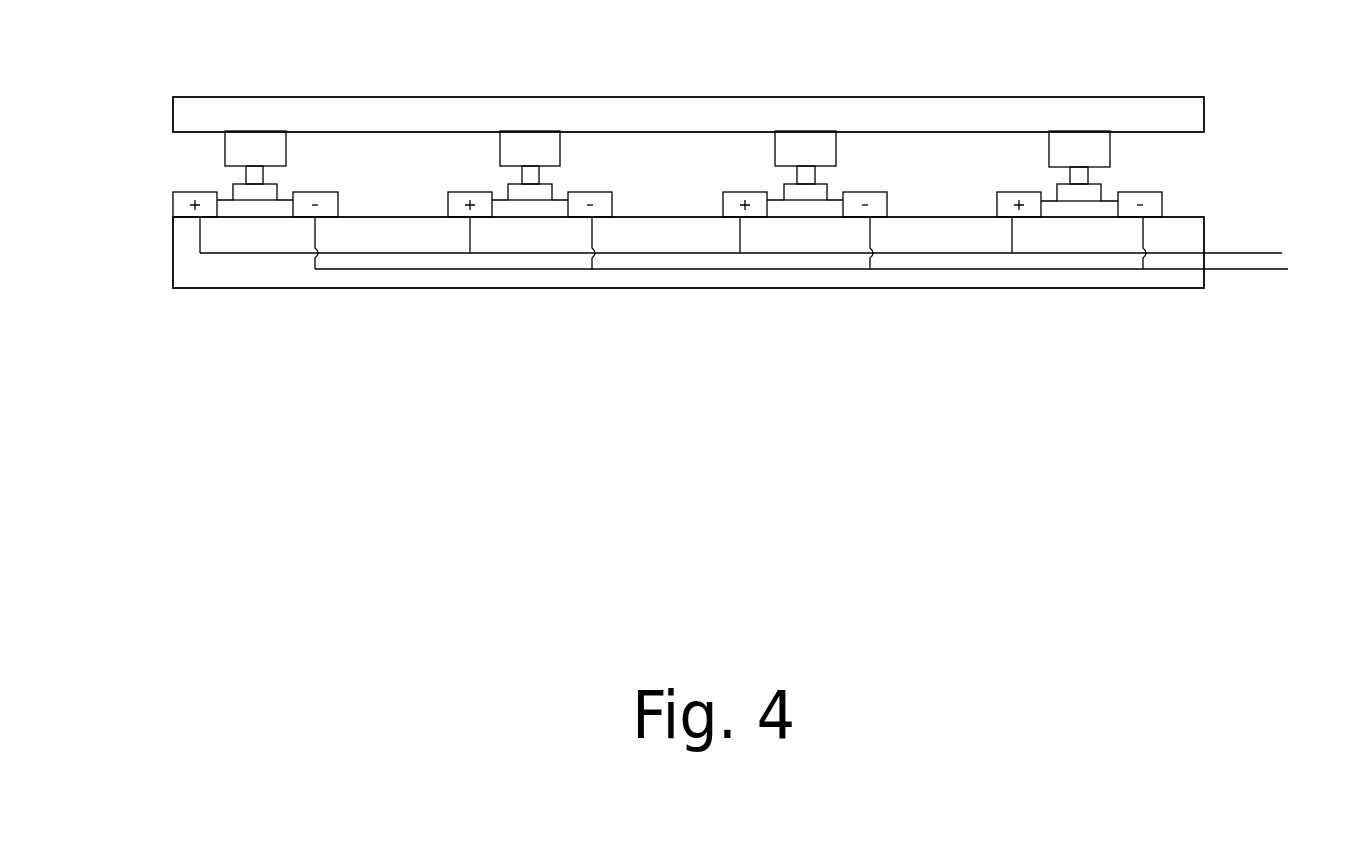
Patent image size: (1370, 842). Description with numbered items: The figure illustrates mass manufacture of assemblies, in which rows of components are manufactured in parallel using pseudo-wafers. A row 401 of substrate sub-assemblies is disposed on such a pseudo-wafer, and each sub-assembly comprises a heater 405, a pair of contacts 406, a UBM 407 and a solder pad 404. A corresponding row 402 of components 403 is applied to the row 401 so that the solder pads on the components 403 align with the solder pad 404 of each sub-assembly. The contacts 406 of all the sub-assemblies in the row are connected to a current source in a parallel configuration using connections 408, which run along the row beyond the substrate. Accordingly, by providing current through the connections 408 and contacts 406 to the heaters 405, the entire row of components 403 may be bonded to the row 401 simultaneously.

The row of substrate sub-assemblies 401 is at (173, 252).
The row of components 402 is at (173, 113).
The component 403 is at (500, 141).
The solder pad 404 is at (522, 179).
The heater 405 is at (558, 198).
The pair of contacts 406 is at (448, 197).
The UBM 407 is at (783, 195).
The connections 408 is at (1233, 253).